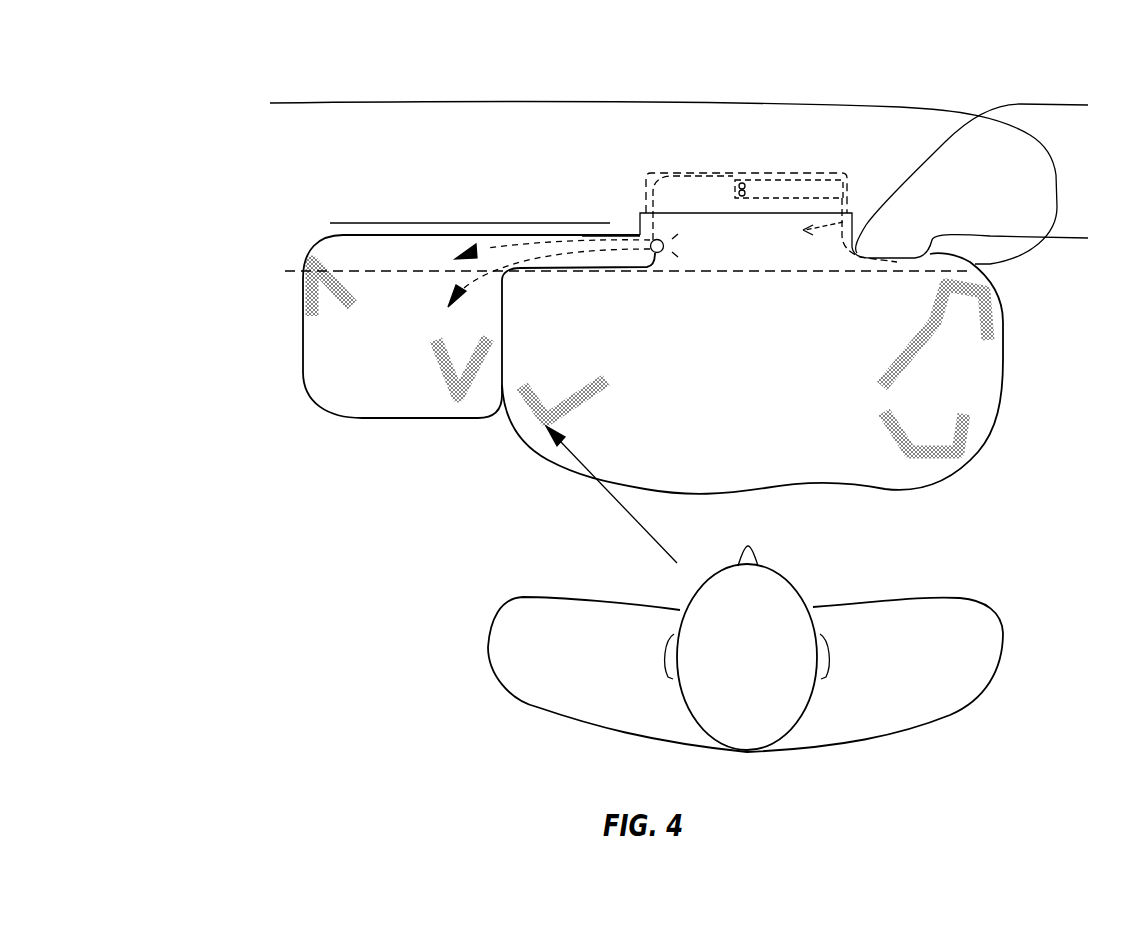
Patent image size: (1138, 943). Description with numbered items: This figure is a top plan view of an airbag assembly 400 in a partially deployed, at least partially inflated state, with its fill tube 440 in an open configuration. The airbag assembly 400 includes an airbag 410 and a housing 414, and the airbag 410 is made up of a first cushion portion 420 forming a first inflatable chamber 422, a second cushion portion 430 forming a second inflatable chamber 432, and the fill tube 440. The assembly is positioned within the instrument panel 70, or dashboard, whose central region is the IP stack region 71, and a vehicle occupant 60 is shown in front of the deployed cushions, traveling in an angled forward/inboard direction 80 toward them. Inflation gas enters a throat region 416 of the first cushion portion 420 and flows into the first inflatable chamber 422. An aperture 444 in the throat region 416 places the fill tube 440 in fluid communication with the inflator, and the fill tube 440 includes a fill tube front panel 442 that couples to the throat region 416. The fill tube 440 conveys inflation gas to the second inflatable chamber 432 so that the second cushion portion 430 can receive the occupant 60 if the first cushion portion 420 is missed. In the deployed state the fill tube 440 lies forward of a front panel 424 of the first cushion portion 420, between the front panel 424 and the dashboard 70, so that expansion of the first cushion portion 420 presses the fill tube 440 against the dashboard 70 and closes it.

The vehicle occupant 60 is at (930, 670).
The instrument panel 70 is at (618, 158).
The IP stack region 71 is at (394, 188).
The angled forward/inboard direction 80 is at (614, 500).
The airbag assembly 400 is at (802, 128).
The airbag 410 is at (990, 174).
The housing 414 is at (722, 173).
The throat region 416 is at (889, 216).
The first cushion portion 420 is at (987, 437).
The first inflatable chamber 422 is at (992, 383).
The front panel 424 is at (548, 306).
The second cushion portion 430 is at (303, 312).
The second inflatable chamber 432 is at (332, 334).
The fill tube 440 is at (517, 220).
The fill tube front panel 442 is at (582, 236).
The aperture 444 is at (661, 252).